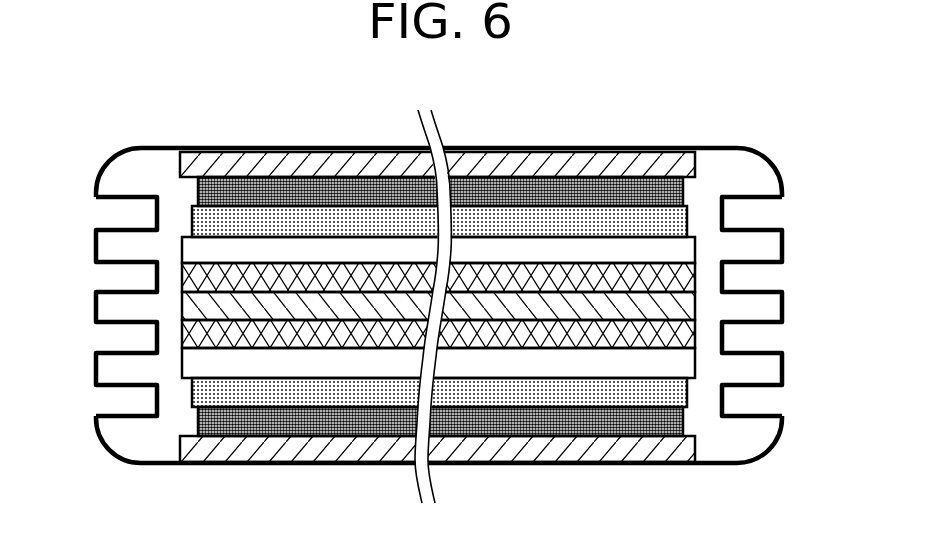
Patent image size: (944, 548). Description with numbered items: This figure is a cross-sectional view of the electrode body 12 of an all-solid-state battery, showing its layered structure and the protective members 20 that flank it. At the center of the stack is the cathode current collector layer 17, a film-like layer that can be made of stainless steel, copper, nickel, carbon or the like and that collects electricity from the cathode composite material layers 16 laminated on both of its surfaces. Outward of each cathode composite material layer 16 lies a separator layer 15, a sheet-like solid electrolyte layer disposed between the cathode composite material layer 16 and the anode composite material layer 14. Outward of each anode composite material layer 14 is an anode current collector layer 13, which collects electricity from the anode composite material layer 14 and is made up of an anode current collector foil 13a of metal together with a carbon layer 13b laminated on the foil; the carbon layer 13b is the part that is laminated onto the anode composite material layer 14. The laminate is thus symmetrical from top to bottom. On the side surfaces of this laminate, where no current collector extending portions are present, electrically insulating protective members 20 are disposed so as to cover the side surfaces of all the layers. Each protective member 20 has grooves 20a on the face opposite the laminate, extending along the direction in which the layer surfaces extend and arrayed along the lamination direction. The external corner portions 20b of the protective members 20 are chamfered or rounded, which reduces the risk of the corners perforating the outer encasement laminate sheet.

The electrode body 12 is at (153, 86).
The anode current collector layer 13 is at (848, 143).
The anode current collector foil 13a is at (693, 162).
The carbon layer 13b is at (683, 191).
The anode composite material layer 14 is at (687, 220).
The separator layer 15 is at (680, 250).
The cathode composite material layer 16 is at (685, 280).
The cathode current collector layer 17 is at (690, 308).
The protective member 20 is at (104, 130).
The groove 20a is at (89, 214).
The external corner portion 20b is at (100, 170).